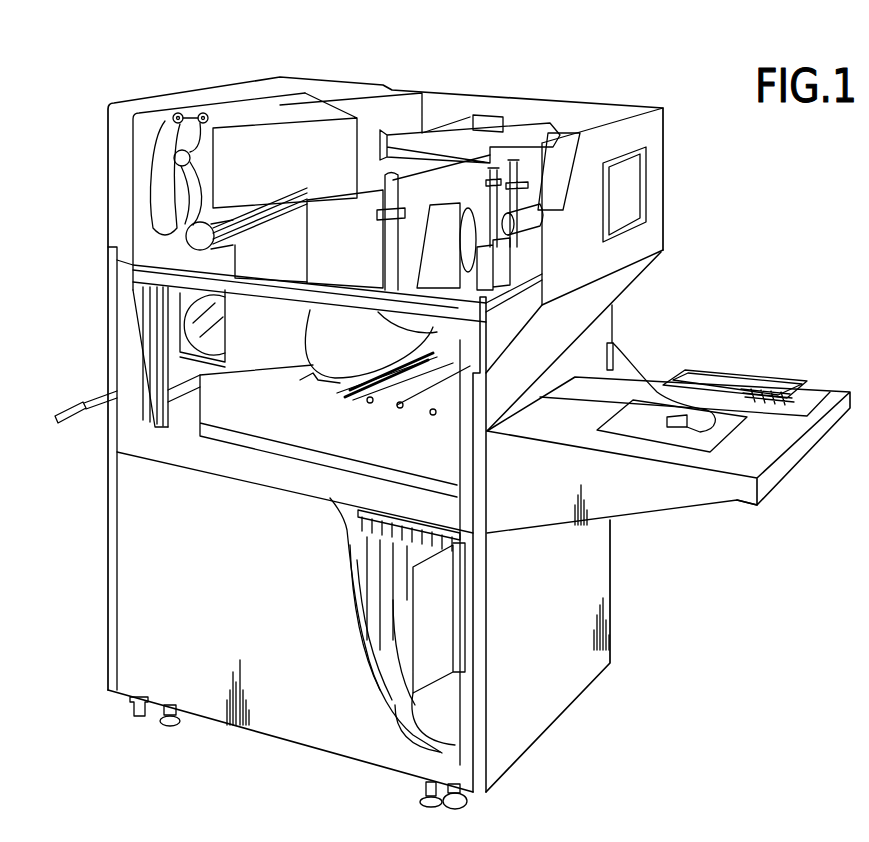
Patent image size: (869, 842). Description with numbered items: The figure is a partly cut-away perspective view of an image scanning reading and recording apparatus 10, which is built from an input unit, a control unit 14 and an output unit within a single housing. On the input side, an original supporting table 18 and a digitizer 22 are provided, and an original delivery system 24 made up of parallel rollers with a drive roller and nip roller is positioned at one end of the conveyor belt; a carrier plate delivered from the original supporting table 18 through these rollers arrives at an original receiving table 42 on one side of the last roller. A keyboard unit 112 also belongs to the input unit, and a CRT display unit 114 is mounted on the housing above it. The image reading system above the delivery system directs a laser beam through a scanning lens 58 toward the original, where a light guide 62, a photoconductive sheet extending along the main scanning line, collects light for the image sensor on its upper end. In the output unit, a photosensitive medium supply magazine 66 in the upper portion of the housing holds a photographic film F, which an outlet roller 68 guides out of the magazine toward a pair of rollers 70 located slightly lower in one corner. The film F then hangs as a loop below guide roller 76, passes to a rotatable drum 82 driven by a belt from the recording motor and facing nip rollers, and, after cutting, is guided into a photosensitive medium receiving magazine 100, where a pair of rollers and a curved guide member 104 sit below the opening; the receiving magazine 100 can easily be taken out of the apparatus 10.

The image scanning reading and recording apparatus 10 is at (684, 124).
The control unit 14 is at (438, 617).
The original supporting table 18 is at (753, 442).
The digitizer 22 is at (680, 430).
The original delivery system 24 is at (395, 404).
The original receiving table 42 is at (80, 425).
The scanning lens 58 is at (471, 243).
The light guide 62 is at (325, 343).
The photosensitive medium supply magazine 66 is at (318, 146).
The outlet roller 68 is at (203, 113).
The pair of rollers 70 is at (178, 113).
The guide roller 76 is at (175, 160).
The rotatable drum 82 is at (186, 238).
The photosensitive medium receiving magazine 100 is at (177, 305).
The curved guide member 104 is at (178, 336).
The keyboard unit 112 is at (718, 378).
The CRT display unit 114 is at (625, 187).
The photographic film F is at (162, 200).